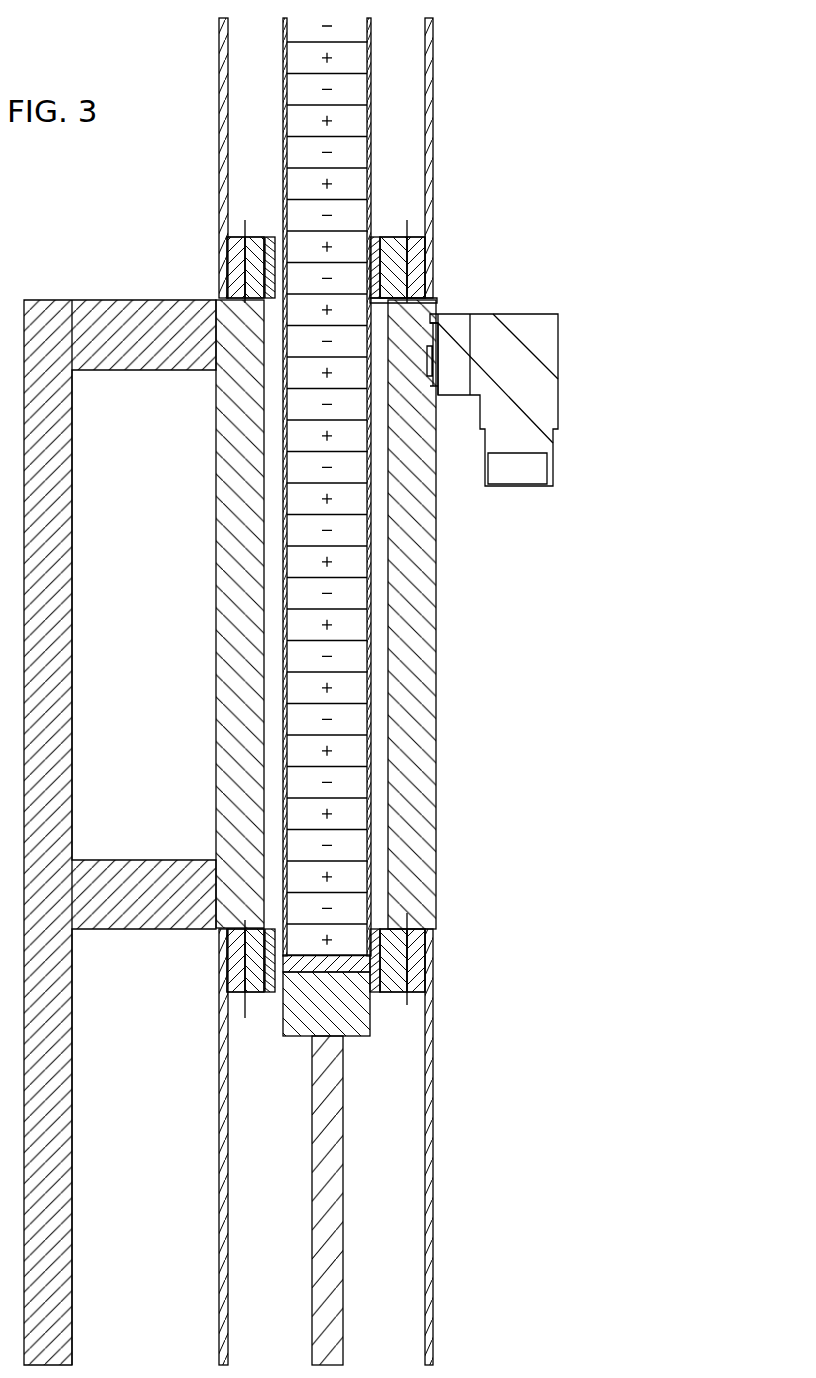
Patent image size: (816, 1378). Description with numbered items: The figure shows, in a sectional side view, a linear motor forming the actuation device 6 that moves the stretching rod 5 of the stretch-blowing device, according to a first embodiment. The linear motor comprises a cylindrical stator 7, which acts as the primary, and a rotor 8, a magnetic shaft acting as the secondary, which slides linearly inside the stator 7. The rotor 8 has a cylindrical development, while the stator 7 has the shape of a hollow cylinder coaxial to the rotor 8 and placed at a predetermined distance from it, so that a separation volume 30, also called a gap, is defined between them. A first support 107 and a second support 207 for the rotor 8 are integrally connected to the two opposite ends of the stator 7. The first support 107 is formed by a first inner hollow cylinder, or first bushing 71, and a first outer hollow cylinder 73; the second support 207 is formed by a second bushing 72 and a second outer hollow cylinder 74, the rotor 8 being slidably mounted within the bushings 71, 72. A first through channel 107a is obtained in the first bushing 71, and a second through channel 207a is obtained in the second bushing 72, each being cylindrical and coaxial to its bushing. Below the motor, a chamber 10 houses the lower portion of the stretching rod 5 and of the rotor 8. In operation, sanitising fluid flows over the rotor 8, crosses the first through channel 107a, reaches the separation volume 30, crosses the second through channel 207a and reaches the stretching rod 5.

The stretching rod 5 is at (330, 1137).
The actuation device 6 is at (503, 752).
The cylindrical stator 7 is at (438, 861).
The rotor 8 is at (357, 672).
The chamber 10 is at (402, 1048).
The separation volume 30 is at (275, 780).
The first bushing 71 is at (268, 237).
The second bushing 72 is at (277, 993).
The first outer hollow cylinder 73 is at (415, 268).
The second outer hollow cylinder 74 is at (235, 957).
The first support 107 is at (227, 267).
The first through channel 107a is at (378, 237).
The second support 207 is at (433, 965).
The second through channel 207a is at (278, 992).